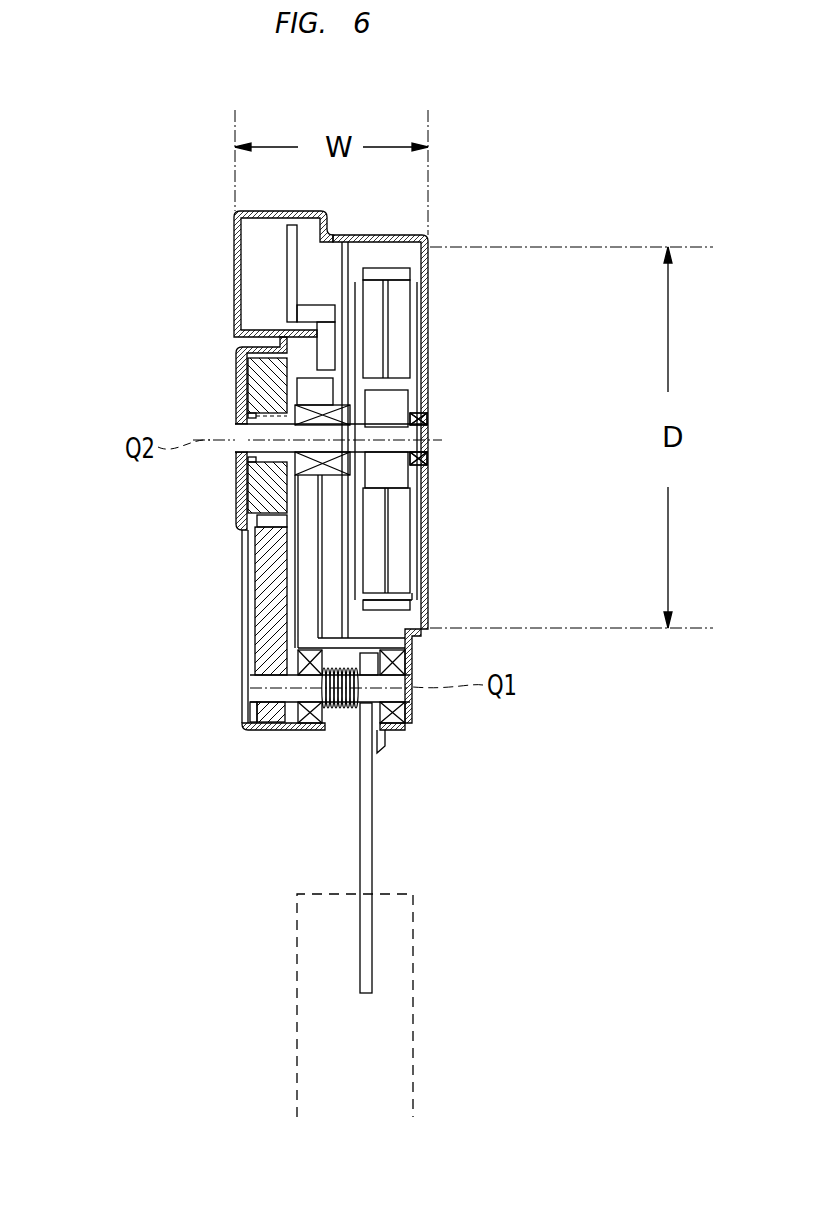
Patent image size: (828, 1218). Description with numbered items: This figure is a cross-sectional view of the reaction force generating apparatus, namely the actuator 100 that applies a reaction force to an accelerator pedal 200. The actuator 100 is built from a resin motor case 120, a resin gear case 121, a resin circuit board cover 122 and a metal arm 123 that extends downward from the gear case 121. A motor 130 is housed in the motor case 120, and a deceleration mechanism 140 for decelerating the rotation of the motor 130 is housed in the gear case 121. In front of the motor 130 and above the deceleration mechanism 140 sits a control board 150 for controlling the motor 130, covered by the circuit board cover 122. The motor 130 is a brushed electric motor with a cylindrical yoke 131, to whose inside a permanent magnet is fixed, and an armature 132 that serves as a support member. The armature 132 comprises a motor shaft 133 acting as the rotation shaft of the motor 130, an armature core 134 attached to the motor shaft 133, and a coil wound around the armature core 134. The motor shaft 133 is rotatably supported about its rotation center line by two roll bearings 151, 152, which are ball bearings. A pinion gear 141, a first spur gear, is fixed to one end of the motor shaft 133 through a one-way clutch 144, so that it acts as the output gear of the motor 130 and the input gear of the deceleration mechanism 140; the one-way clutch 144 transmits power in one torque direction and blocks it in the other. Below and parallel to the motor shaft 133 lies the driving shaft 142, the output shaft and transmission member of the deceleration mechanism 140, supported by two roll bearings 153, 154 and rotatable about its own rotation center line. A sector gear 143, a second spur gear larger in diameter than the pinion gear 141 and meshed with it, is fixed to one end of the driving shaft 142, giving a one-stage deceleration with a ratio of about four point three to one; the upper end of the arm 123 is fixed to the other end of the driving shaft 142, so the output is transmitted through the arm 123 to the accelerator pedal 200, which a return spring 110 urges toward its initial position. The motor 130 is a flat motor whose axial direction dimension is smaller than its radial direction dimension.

The actuator 100 is at (477, 220).
The return spring 110 is at (342, 707).
The motor case 120 is at (428, 330).
The gear case 121 is at (242, 588).
The circuit board cover 122 is at (233, 230).
The arm 123 is at (372, 812).
The motor 130 is at (442, 547).
The yoke 131 is at (410, 605).
The armature 132 is at (418, 439).
The motor shaft 133 is at (425, 430).
The armature core 134 is at (423, 468).
The deceleration mechanism 140 is at (230, 492).
The pinion gear 141 is at (248, 390).
The driving shaft 142 is at (265, 688).
The sector gear 143 is at (262, 550).
The one-way clutch 144 is at (236, 413).
The control board 150 is at (287, 306).
The roll bearing 151 is at (430, 413).
The roll bearing 152 is at (330, 476).
The roll bearing 153 is at (410, 708).
The roll bearing 154 is at (298, 708).
The accelerator pedal 200 is at (413, 997).